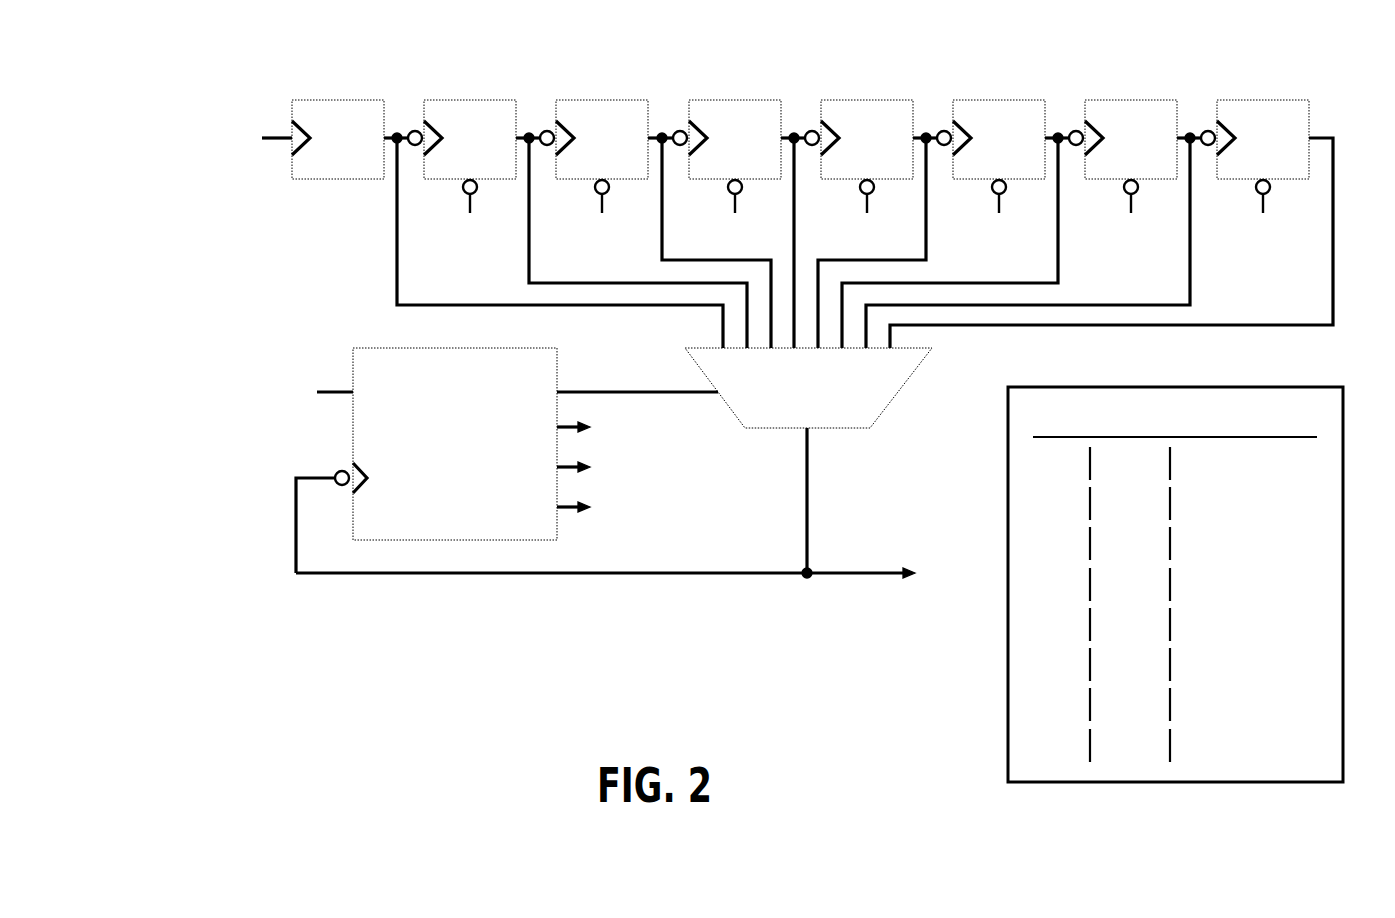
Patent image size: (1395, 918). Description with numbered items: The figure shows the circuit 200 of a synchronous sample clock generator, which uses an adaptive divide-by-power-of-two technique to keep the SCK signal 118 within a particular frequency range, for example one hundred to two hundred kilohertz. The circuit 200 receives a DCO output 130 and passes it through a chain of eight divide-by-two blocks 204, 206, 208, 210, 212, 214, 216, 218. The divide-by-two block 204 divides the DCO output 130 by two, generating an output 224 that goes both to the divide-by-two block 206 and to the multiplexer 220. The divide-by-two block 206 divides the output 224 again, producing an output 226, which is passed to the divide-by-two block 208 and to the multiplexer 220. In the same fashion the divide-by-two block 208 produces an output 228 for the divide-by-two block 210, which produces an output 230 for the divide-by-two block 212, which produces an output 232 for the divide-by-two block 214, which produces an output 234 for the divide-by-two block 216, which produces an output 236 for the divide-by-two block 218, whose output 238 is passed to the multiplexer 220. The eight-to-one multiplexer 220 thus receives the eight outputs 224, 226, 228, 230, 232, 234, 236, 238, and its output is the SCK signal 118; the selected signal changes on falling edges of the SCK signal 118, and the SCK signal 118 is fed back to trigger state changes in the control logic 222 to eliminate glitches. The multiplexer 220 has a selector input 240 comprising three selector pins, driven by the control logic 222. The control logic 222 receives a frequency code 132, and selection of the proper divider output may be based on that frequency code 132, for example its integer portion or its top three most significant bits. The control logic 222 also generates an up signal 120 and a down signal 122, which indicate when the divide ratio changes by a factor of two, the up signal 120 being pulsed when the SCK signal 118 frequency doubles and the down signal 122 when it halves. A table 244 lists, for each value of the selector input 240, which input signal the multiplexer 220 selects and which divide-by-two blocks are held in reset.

The circuit 200 is at (595, 28).
The divide-by-2 block 204 is at (318, 88).
The divide-by-2 block 206 is at (450, 88).
The divide-by-2 block 208 is at (582, 88).
The divide-by-2 block 210 is at (715, 88).
The divide-by-2 block 212 is at (847, 88).
The divide-by-2 block 214 is at (979, 88).
The divide-by-2 block 216 is at (1111, 88).
The divide-by-2 block 218 is at (1243, 88).
The output 224 is at (398, 130).
The output 226 is at (530, 130).
The output 228 is at (663, 130).
The output 230 is at (795, 130).
The output 232 is at (927, 130).
The output 234 is at (1059, 130).
The output 236 is at (1191, 130).
The output 238 is at (1317, 128).
The multiplexer 220 is at (922, 406).
The control logic 222 is at (435, 518).
The selector input 240 is at (600, 384).
The DCO output 130 is at (138, 196).
The frequency code 132 is at (218, 442).
The up signal 120 is at (640, 478).
The down signal 122 is at (680, 518).
The SCK signal 118 is at (928, 624).
The table 244 is at (1230, 378).